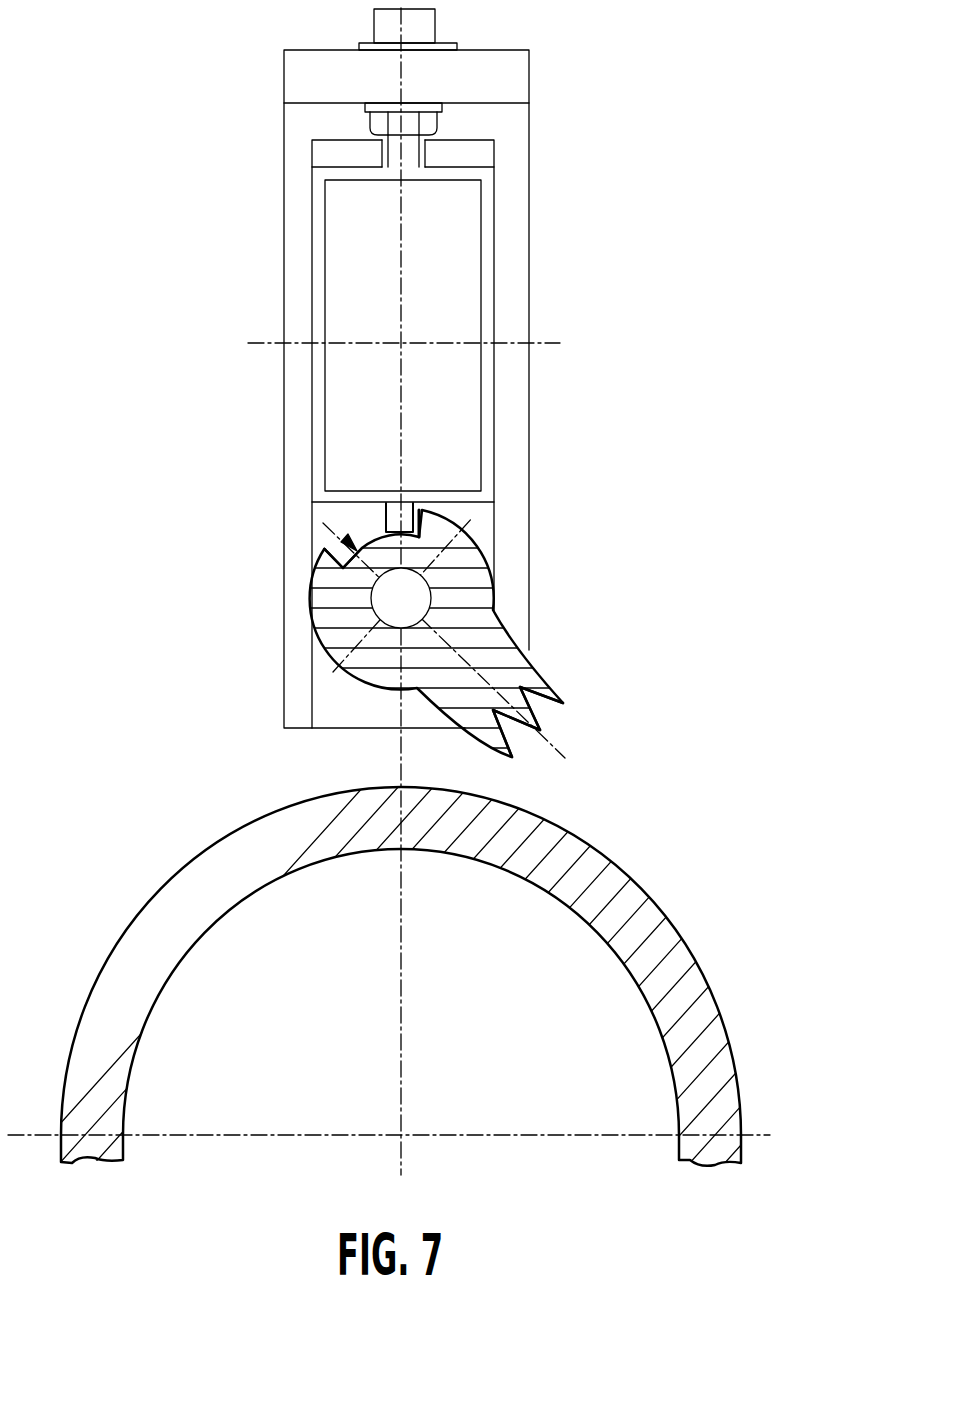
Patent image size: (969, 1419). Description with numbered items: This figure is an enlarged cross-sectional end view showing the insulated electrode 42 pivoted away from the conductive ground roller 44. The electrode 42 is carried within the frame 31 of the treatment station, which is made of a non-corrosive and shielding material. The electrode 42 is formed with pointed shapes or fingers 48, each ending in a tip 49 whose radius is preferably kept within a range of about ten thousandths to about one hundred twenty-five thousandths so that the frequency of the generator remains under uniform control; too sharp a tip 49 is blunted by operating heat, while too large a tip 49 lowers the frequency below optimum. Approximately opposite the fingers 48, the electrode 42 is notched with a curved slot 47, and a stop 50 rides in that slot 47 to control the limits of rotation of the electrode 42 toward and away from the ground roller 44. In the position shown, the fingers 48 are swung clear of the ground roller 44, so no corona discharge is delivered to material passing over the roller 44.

The frame 31 is at (487, 280).
The insulated electrode 42 is at (335, 668).
The conductive ground roller 44 is at (627, 895).
The curved slot 47 is at (335, 537).
The fingers 48 is at (542, 682).
The tip 49 is at (565, 758).
The stop 50 is at (428, 520).